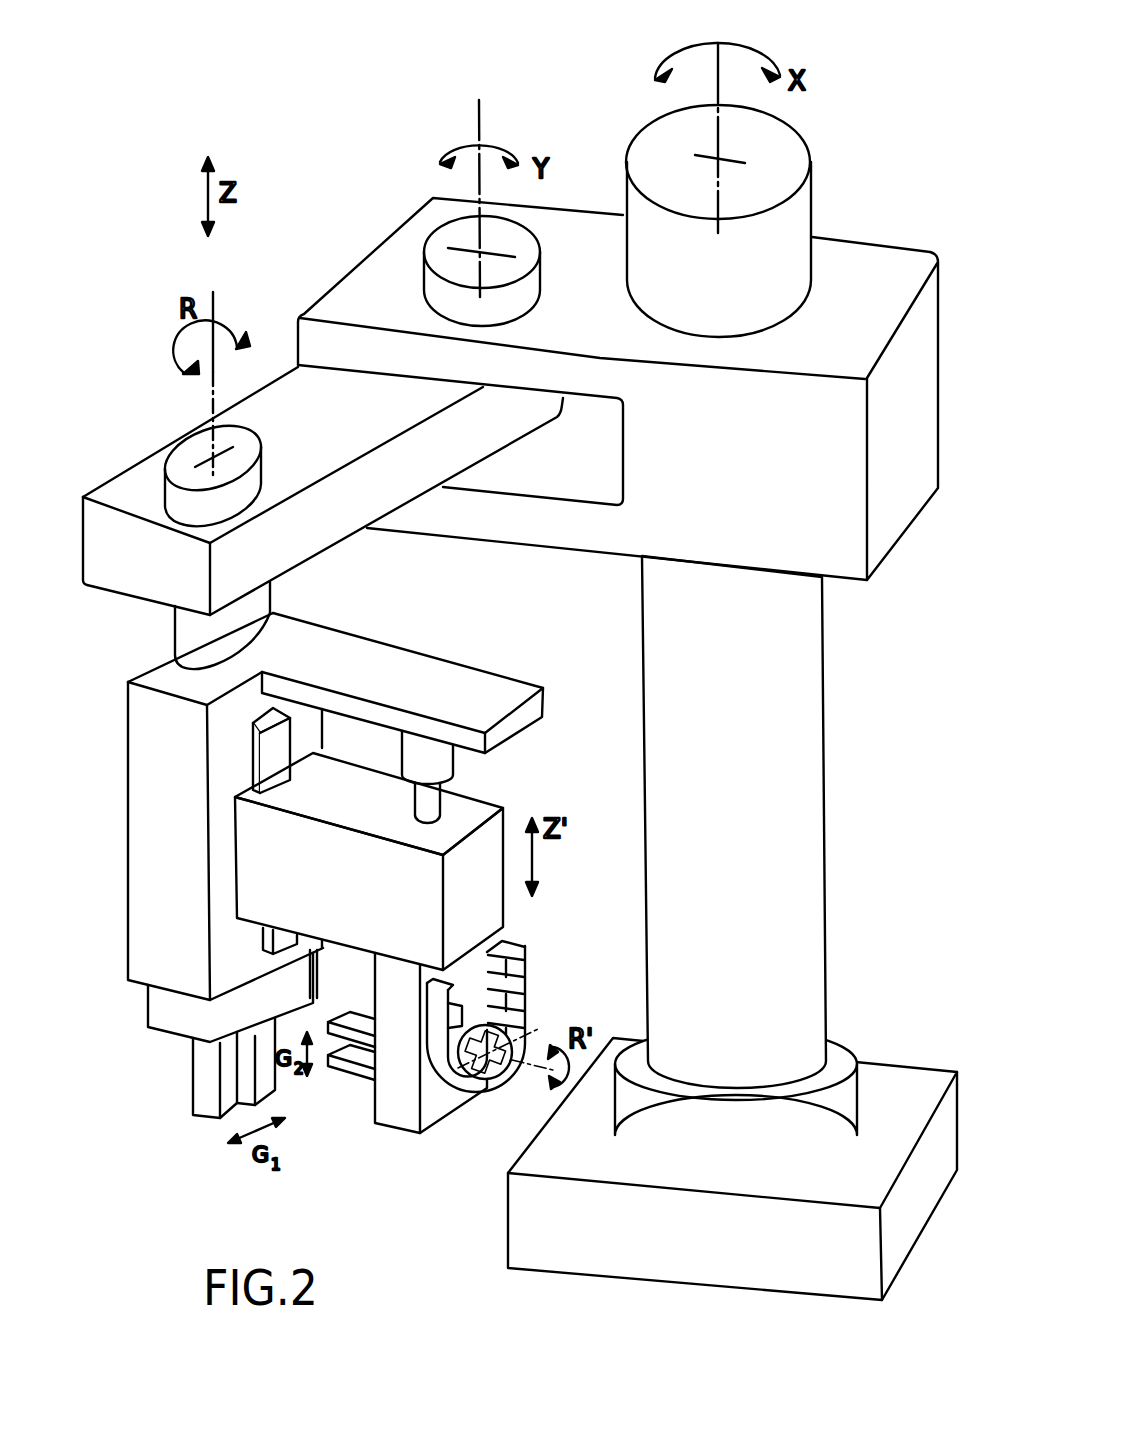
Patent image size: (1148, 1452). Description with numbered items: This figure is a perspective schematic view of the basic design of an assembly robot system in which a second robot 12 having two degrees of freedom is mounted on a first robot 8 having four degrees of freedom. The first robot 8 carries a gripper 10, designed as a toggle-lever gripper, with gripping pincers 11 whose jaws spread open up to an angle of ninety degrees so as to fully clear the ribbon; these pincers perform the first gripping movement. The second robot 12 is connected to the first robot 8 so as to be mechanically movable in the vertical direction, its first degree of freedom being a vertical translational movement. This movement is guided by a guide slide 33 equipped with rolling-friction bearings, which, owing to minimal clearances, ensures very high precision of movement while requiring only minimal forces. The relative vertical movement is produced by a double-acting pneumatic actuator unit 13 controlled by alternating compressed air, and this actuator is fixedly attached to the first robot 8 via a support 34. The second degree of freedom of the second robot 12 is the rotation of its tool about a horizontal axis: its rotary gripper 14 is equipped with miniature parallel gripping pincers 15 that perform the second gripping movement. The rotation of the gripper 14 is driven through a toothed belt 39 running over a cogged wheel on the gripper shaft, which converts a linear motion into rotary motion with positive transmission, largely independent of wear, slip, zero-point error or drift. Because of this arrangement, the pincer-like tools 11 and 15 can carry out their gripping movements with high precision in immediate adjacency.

The first robot 8 is at (803, 960).
The gripper 10 is at (180, 1027).
The gripping pincers 11 is at (208, 1097).
The second robot 12 is at (470, 853).
The pneumatic actuator unit 13 is at (430, 768).
The rotary gripper 14 is at (502, 1062).
The gripping pincers 15 is at (343, 1067).
The guide slide 33 is at (278, 750).
The support 34 is at (492, 698).
The toothed belt 39 is at (523, 957).